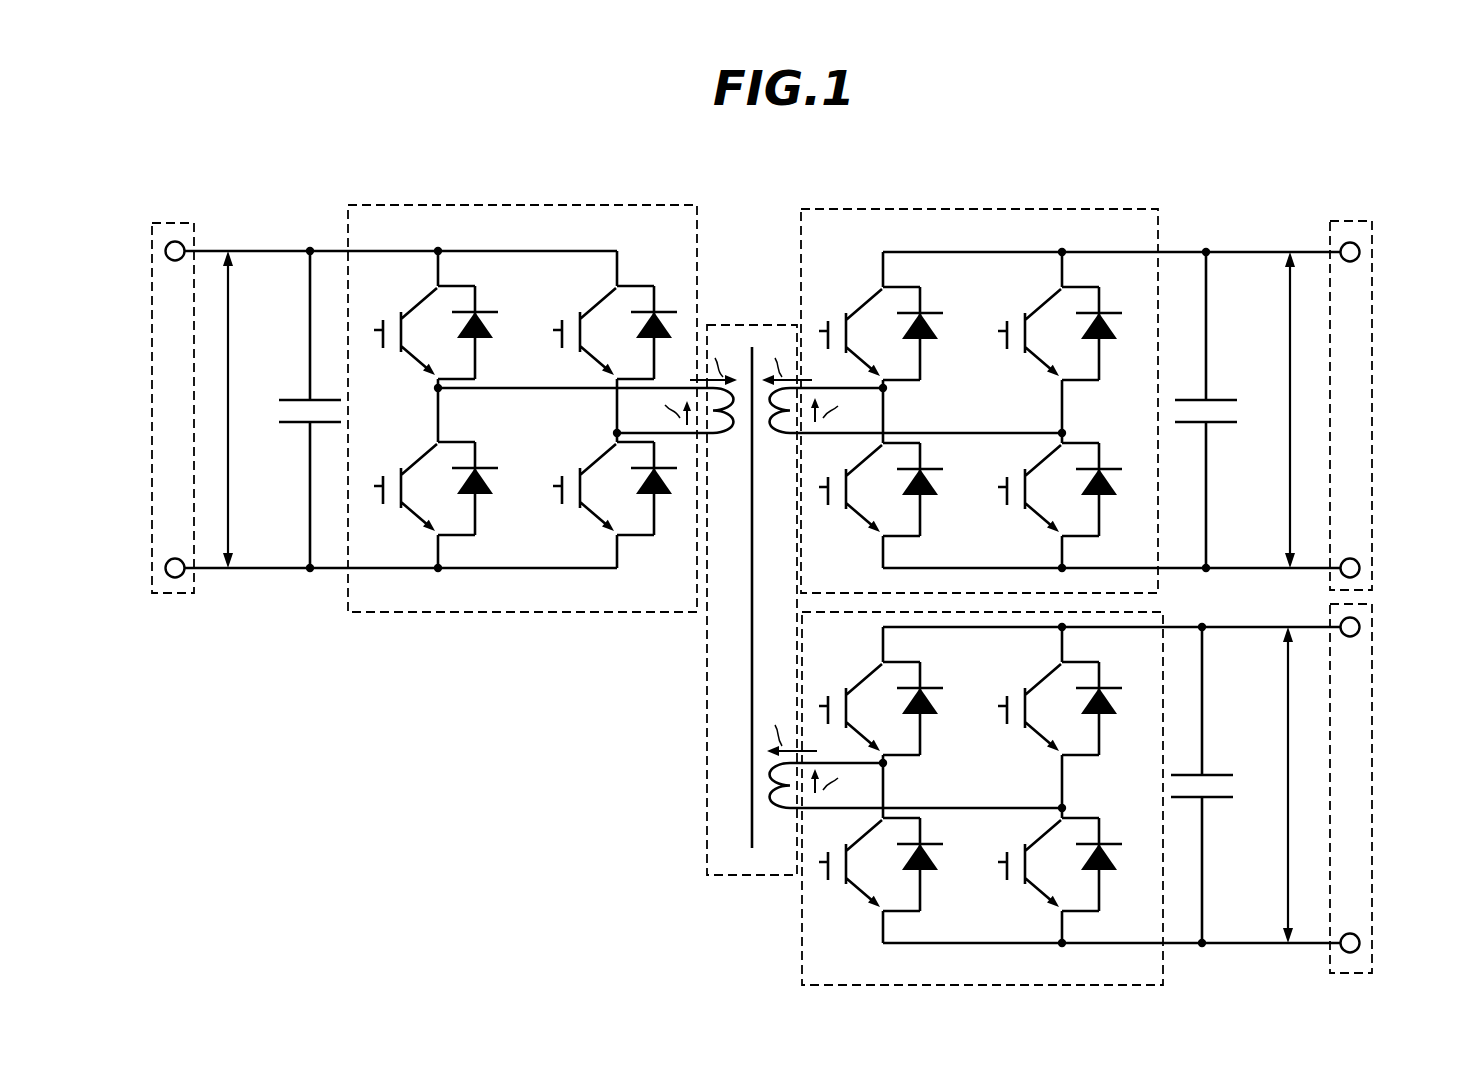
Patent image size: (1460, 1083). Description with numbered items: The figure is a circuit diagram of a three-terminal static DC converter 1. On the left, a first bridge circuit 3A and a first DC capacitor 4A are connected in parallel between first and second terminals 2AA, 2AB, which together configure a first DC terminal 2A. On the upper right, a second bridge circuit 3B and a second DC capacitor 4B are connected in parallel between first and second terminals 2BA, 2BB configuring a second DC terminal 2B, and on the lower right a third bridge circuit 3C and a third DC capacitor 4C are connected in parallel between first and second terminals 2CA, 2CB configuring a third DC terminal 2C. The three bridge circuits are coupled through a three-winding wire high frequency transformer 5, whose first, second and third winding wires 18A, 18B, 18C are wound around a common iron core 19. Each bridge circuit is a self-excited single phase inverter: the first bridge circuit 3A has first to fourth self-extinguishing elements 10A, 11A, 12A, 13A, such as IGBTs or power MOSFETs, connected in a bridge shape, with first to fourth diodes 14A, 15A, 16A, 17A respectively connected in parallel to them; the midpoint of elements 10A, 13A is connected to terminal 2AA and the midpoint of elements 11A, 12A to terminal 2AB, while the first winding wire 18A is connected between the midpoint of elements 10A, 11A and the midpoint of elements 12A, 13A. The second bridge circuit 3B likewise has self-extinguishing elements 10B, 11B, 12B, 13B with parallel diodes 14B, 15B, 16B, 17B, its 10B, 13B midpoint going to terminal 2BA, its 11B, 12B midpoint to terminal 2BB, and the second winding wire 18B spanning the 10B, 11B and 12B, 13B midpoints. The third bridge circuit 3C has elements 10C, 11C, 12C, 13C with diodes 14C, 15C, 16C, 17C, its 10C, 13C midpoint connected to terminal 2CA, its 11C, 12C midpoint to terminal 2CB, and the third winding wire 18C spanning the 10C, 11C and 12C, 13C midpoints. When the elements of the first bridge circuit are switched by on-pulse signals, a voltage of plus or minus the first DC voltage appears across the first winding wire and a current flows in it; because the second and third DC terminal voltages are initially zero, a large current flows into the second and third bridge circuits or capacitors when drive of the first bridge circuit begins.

The three-terminal static DC converter 1 is at (1350, 158).
The first DC terminal 2A is at (195, 222).
The first terminal of the first DC terminal 2AA is at (165, 254).
The second terminal of the first DC terminal 2AB is at (165, 566).
The second DC terminal 2B is at (1372, 222).
The first terminal of the second DC terminal 2BA is at (1360, 256).
The second terminal of the second DC terminal 2BB is at (1360, 565).
The third DC terminal 2C is at (1373, 604).
The first terminal of the third DC terminal 2CA is at (1360, 630).
The second terminal of the third DC terminal 2CB is at (1360, 942).
The first bridge circuit 3A is at (615, 205).
The second bridge circuit 3B is at (1055, 209).
The third bridge circuit 3C is at (1163, 613).
The first DC capacitor 4A is at (305, 398).
The second DC capacitor 4B is at (1217, 398).
The third DC capacitor 4C is at (1217, 775).
The three-winding wire high frequency transformer 5 is at (730, 325).
The first self-extinguishing element 10A is at (420, 305).
The second self-extinguishing element 11A is at (420, 458).
The third self-extinguishing element 12A is at (598, 458).
The fourth self-extinguishing element 13A is at (598, 305).
The first diode 14A is at (483, 338).
The second diode 15A is at (483, 492).
The third diode 16A is at (677, 541).
The fourth diode 17A is at (657, 310).
The first self-extinguishing element 10B is at (866, 305).
The second self-extinguishing element 11B is at (860, 508).
The third self-extinguishing element 12B is at (1040, 508).
The fourth self-extinguishing element 13B is at (1043, 305).
The first diode 14B is at (928, 339).
The second diode 15B is at (922, 493).
The third diode 16B is at (1120, 548).
The fourth diode 17B is at (1102, 310).
The first self-extinguishing element 10C is at (868, 680).
The second self-extinguishing element 11C is at (862, 883).
The third self-extinguishing element 12C is at (1040, 883).
The fourth self-extinguishing element 13C is at (1045, 680).
The first diode 14C is at (928, 714).
The second diode 15C is at (922, 868).
The third diode 16C is at (1123, 920).
The fourth diode 17C is at (1102, 685).
The first winding wire 18A is at (725, 436).
The second winding wire 18B is at (780, 436).
The third winding wire 18C is at (779, 811).
The iron core 19 is at (753, 648).